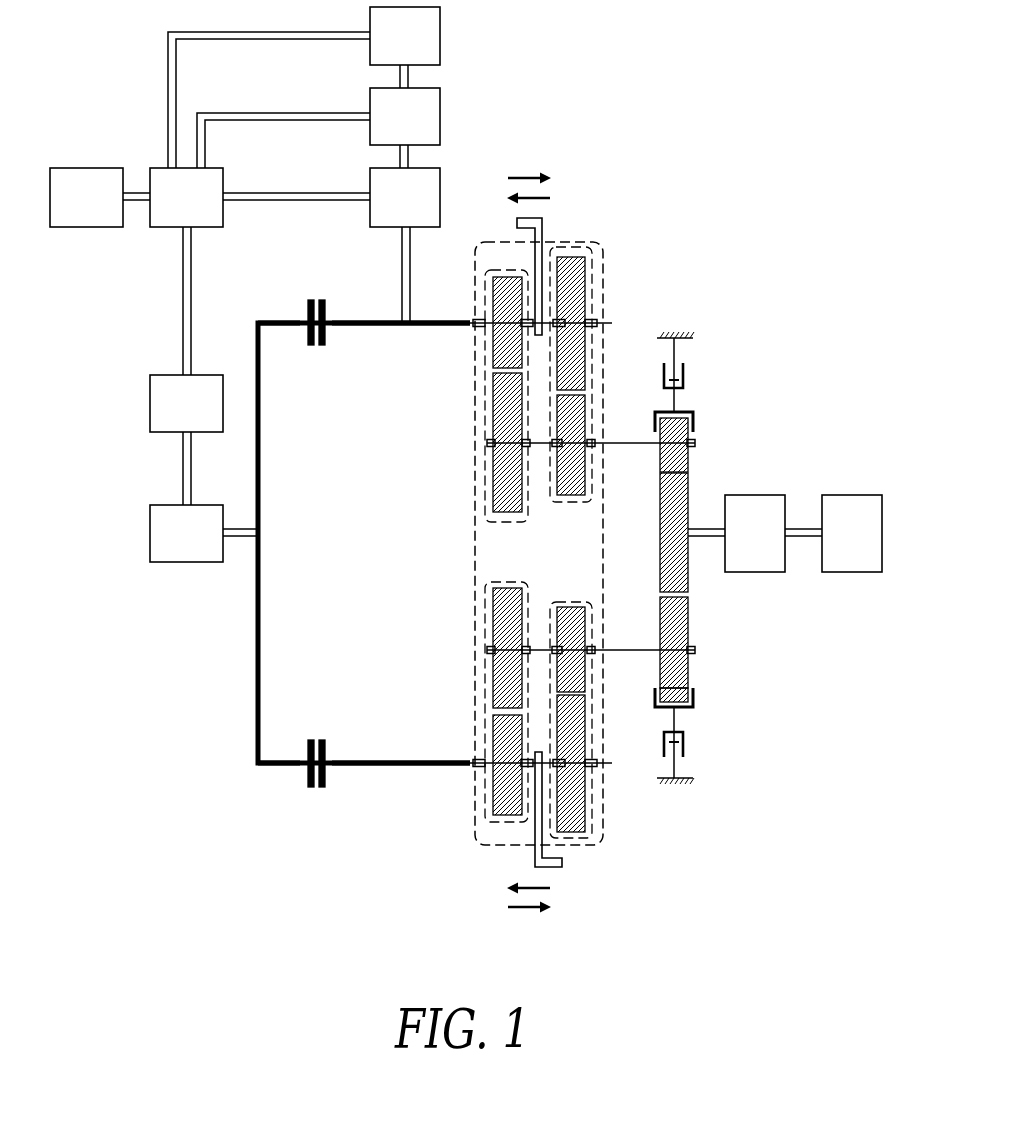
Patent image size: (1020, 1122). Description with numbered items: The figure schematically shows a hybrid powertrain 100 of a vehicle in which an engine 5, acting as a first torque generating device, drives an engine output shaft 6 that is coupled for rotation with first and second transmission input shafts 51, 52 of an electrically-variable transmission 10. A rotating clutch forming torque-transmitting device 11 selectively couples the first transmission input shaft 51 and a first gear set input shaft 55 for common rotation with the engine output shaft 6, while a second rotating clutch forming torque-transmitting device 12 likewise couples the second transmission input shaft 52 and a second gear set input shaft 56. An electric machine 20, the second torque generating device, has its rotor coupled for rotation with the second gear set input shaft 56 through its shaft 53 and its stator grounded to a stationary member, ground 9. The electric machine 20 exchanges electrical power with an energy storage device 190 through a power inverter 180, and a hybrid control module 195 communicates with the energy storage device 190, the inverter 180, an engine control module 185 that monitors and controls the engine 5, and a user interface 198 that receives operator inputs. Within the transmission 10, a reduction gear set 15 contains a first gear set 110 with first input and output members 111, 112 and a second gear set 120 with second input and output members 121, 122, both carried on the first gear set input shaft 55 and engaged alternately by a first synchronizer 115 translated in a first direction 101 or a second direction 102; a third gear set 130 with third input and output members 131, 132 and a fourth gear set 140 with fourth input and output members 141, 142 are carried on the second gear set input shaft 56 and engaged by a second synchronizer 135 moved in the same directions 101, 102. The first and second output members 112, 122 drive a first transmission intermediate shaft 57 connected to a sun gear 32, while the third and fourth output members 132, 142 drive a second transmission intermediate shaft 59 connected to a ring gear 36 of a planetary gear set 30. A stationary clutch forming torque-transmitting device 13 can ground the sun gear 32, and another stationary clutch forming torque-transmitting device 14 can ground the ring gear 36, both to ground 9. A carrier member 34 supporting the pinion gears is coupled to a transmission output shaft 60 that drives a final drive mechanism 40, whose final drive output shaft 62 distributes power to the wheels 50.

The hybrid powertrain 100 is at (786, 214).
The engine 5 is at (180, 546).
The engine output shaft 6 is at (243, 538).
The electrically-variable transmission 10 is at (331, 278).
The torque-transmitting device C1 11 is at (327, 752).
The torque-transmitting device C2 12 is at (327, 340).
The first transmission input shaft 51 is at (275, 762).
The second transmission input shaft 52 is at (277, 327).
The motor shaft 53 is at (402, 300).
The first gear set input shaft 55 is at (452, 762).
The second gear set input shaft 56 is at (452, 327).
The electric machine 20 is at (393, 210).
The hybrid control module 195 is at (168, 210).
The user interface 198 is at (68, 210).
The energy storage device 190 is at (387, 48).
The power inverter 180 is at (387, 129).
The engine control module 185 is at (168, 416).
The reduction gear set 15 is at (618, 345).
The third gear set 130 is at (486, 290).
The third input member 131 is at (506, 277).
The third output member 132 is at (507, 503).
The second synchronizer 135 is at (545, 228).
The fourth gear set 140 is at (596, 283).
The fourth input member 141 is at (572, 268).
The fourth output member 142 is at (568, 492).
The first gear set 110 is at (490, 787).
The first input member 111 is at (503, 812).
The first output member 112 is at (497, 590).
The first synchronizer 115 is at (562, 863).
The second gear set 120 is at (590, 815).
The second input member 121 is at (572, 832).
The second output member 122 is at (555, 600).
The first direction 101 is at (548, 192).
The second direction 102 is at (521, 176).
The second transmission intermediate shaft 59 is at (622, 451).
The first transmission intermediate shaft 57 is at (622, 647).
The planetary gear set 30 is at (773, 411).
The ground 9 is at (700, 338).
The torque-transmitting device C4 14 is at (684, 378).
The torque-transmitting device C3 13 is at (685, 745).
The ring gear 36 is at (693, 462).
The carrier member 34 is at (690, 590).
The sun gear 32 is at (695, 700).
The transmission output shaft 60 is at (702, 528).
The final drive mechanism 40 is at (743, 547).
The final drive output shaft 62 is at (803, 528).
The wheels 50 is at (840, 547).